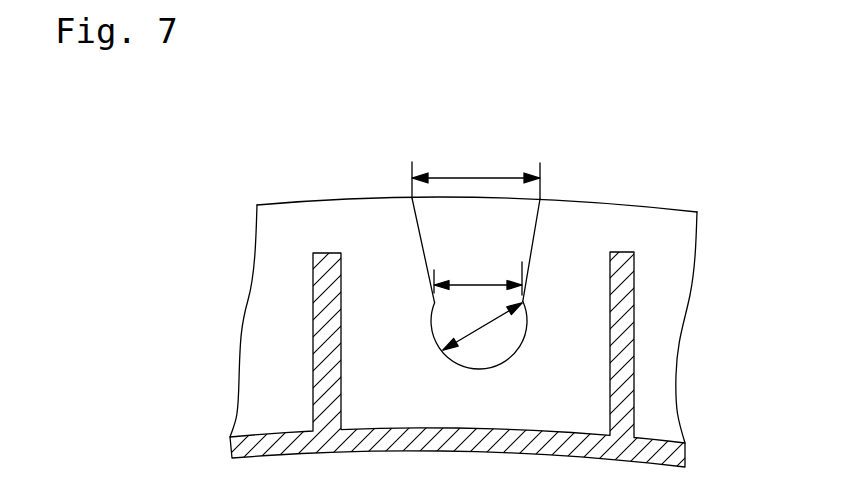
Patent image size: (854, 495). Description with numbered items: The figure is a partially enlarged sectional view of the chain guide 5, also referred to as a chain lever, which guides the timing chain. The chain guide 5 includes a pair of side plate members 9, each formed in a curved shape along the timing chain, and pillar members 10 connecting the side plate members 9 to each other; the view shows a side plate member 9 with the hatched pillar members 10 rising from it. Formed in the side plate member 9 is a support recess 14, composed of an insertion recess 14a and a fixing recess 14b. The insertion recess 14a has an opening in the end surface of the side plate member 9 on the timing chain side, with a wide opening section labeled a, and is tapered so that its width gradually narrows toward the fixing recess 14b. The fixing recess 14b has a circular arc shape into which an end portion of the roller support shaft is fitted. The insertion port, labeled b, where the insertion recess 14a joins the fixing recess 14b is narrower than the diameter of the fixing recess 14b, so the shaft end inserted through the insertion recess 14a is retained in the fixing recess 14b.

The chain guide 5 is at (627, 195).
The side plate member 9 is at (281, 220).
The pillar member 10 is at (327, 333).
The support recess 14 is at (468, 265).
The insertion recess 14a is at (423, 220).
The fixing recess 14b is at (507, 347).